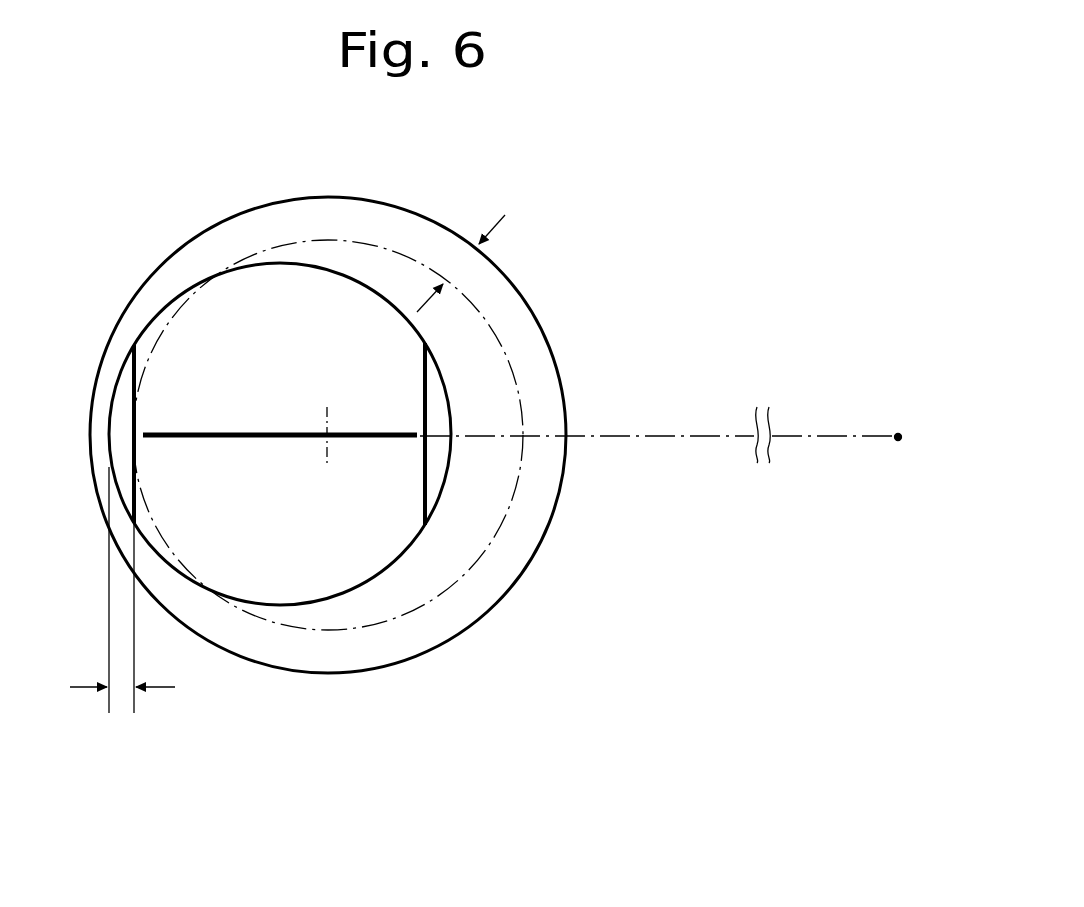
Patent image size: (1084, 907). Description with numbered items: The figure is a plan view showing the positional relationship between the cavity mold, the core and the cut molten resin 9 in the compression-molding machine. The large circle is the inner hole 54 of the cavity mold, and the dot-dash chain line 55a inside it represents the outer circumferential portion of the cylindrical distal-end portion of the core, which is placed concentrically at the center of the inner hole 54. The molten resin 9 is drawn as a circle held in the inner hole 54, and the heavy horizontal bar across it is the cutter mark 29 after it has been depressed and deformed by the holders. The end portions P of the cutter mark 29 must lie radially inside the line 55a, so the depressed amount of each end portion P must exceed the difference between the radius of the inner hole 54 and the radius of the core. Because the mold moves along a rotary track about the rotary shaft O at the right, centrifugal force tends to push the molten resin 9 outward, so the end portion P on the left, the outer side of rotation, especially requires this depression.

The inner hole 54 is at (540, 525).
The dot-dash chain line 55a is at (503, 352).
The molten resin 9 is at (375, 288).
The cutter mark 29 is at (235, 433).
The end portions of the cutter mark P is at (134, 345).
The rotary shaft O is at (619, 430).